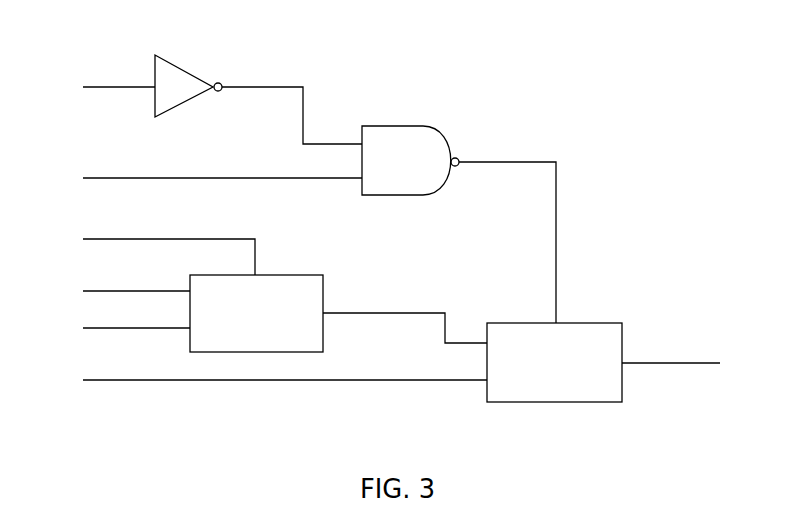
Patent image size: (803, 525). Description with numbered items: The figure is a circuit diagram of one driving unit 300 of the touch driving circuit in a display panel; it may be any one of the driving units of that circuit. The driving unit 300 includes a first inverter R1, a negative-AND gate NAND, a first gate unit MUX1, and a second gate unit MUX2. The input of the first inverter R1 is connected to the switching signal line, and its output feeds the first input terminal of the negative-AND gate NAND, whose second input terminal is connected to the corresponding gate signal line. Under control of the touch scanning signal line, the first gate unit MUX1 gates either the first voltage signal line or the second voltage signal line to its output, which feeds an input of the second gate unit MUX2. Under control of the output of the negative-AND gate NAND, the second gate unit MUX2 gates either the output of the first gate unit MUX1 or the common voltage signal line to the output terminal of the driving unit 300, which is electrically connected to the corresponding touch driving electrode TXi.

The driving unit 300 is at (685, 38).
The first inverter R1 is at (188, 98).
The negative-AND gate NAND is at (426, 172).
The first gate unit MUX1 is at (256, 313).
The second gate unit MUX2 is at (554, 362).
The touch driving electrode TXi is at (692, 361).